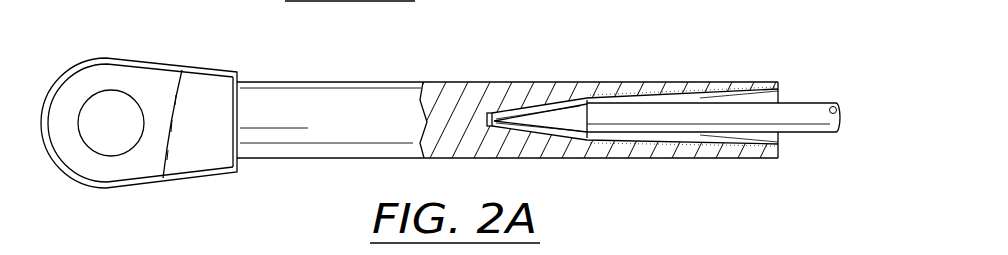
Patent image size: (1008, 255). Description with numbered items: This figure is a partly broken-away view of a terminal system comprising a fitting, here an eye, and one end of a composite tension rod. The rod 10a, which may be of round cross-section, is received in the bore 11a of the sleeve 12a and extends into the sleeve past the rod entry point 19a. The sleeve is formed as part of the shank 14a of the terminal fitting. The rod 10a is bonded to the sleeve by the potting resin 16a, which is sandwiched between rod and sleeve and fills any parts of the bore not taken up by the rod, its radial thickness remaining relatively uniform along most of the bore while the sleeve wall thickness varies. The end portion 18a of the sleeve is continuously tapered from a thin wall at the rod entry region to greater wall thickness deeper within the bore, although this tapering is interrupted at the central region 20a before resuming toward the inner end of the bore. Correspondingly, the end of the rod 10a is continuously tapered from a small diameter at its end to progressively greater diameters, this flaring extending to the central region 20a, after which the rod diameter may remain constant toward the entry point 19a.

The rod 10a is at (808, 102).
The bore 11a is at (681, 99).
The sleeve 12a is at (663, 82).
The shank 14a is at (407, 83).
The potting resin 16a is at (607, 98).
The end portion 18a is at (765, 80).
The rod entry point 19a is at (781, 157).
The central region 20a is at (717, 167).